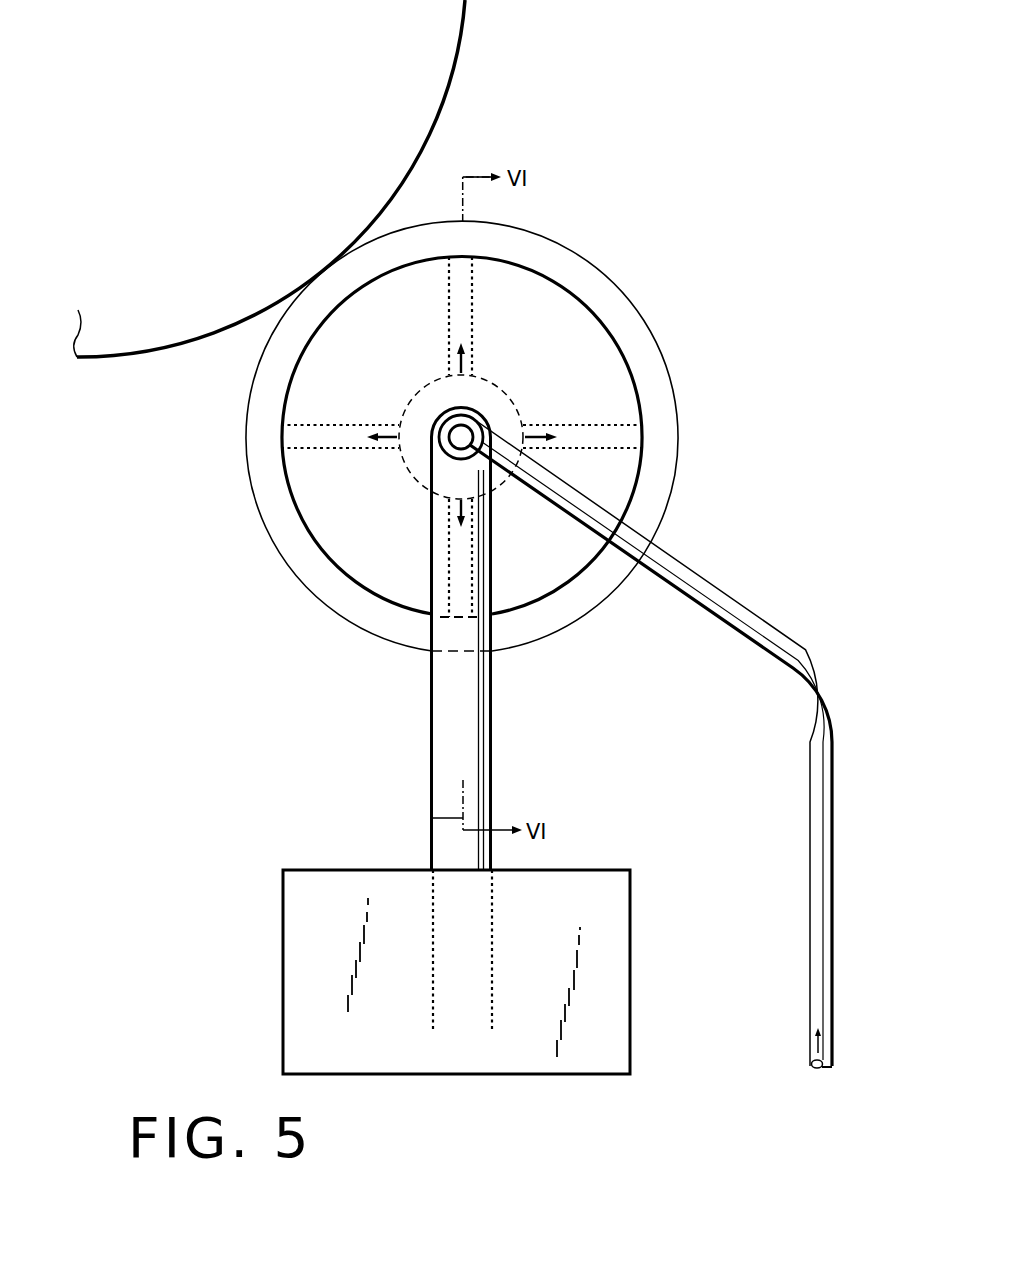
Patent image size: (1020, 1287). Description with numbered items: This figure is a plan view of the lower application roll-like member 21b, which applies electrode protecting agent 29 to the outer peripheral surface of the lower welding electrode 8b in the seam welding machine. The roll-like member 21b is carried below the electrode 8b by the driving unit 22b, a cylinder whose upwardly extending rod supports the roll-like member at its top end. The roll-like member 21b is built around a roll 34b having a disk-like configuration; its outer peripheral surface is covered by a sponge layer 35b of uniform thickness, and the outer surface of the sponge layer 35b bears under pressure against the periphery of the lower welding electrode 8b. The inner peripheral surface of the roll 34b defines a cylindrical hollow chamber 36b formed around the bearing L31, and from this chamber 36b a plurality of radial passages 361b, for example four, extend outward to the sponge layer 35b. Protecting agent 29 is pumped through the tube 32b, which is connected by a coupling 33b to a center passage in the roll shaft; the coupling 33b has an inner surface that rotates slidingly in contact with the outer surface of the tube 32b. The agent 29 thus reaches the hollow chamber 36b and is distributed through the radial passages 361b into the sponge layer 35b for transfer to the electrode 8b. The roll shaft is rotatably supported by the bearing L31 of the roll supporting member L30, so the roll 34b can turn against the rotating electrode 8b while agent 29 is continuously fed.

The lower welding electrode 8b is at (448, 28).
The lower application roll-like member 21b is at (532, 395).
The driving unit 22b is at (283, 937).
The electrode protecting agent 29 is at (823, 1068).
The tube 32b is at (697, 572).
The coupling 33b is at (470, 418).
The roll 34b is at (567, 327).
The sponge layer 35b is at (455, 227).
The cylindrical hollow chamber 36b is at (524, 450).
The radial passages 361b is at (577, 435).
The roll supporting member L30 is at (484, 727).
The bearing L31 is at (450, 444).